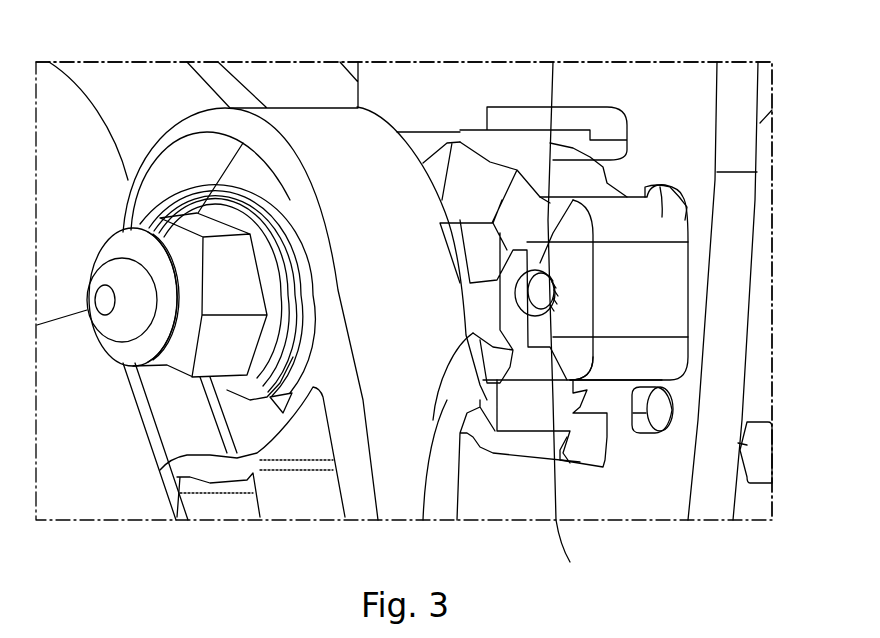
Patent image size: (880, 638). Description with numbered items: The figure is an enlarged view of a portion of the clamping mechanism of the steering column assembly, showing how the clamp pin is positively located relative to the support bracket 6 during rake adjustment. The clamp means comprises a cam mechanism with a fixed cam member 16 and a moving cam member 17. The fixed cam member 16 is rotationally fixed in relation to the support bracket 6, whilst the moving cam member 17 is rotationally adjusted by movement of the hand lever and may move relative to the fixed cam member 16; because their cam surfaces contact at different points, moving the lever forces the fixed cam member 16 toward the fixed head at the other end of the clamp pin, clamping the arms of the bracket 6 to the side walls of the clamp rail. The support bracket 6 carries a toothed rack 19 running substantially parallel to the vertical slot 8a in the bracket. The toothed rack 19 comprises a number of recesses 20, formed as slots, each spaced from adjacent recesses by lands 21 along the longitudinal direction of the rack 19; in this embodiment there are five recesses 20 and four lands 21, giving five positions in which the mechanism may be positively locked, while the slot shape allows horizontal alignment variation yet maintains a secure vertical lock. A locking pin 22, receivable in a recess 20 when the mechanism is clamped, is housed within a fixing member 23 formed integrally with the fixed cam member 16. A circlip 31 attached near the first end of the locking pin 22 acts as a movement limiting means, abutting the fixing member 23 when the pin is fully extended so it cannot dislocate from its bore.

The support bracket 6 is at (668, 120).
The vertically extending elongate slot 8a is at (543, 117).
The fixed cam member 16 is at (477, 177).
The moving cam member 17 is at (423, 152).
The toothed rack 19 is at (703, 217).
The recesses 20 is at (670, 190).
The lands 21 is at (662, 383).
The locking pin 22 is at (533, 326).
The fixing member 23 is at (610, 307).
The circlip 31 is at (553, 120).